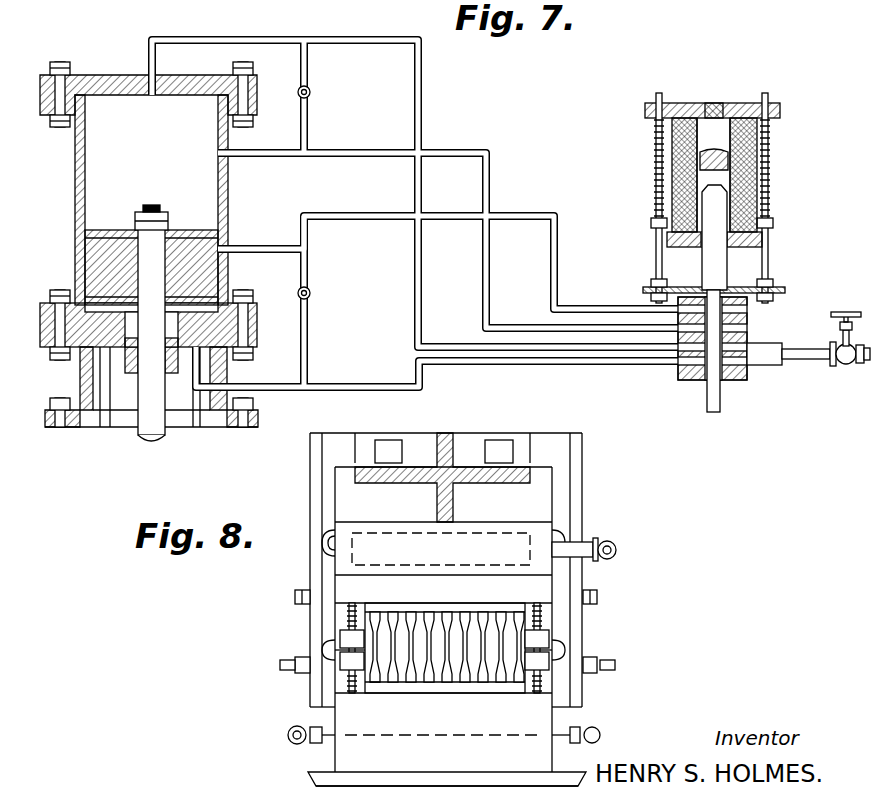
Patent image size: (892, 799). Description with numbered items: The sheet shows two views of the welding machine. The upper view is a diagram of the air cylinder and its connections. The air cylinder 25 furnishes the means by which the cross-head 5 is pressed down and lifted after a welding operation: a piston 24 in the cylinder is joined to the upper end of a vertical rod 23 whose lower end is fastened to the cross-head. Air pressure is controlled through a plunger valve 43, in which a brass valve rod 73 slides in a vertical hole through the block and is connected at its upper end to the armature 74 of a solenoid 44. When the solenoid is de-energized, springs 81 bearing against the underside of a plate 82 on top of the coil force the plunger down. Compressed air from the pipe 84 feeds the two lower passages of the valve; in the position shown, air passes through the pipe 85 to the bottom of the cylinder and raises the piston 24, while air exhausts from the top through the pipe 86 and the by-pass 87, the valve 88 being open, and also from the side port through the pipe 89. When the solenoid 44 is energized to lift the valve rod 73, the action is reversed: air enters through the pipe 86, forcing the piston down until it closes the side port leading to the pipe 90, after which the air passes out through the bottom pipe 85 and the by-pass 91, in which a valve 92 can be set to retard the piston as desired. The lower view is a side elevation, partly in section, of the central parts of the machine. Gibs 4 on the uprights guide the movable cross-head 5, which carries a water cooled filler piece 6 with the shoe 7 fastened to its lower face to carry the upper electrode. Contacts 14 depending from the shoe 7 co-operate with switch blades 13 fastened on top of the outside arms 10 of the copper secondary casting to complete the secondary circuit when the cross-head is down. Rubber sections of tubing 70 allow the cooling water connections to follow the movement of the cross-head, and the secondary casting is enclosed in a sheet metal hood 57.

In FIG. 7, the air cylinder 25 is at (75, 170).
In FIG. 7, the piston 24 is at (85, 257).
In FIG. 7, the vertical rod 23 is at (145, 418).
In FIG. 7, the pipe 86 is at (148, 50).
In FIG. 7, the by-pass 87 is at (308, 62).
In FIG. 7, the valve 88 is at (311, 93).
In FIG. 7, the pipe 89 is at (268, 157).
In FIG. 7, the pipe 90 is at (262, 246).
In FIG. 7, the by-pass 91 is at (308, 340).
In FIG. 7, the valve 92 is at (311, 290).
In FIG. 7, the pipe 85 is at (282, 370).
In FIG. 7, the plate 82 is at (781, 109).
In FIG. 7, the springs 81 is at (769, 160).
In FIG. 7, the solenoid 44 is at (757, 194).
In FIG. 7, the armature 74 is at (727, 258).
In FIG. 7, the valve 43 is at (748, 332).
In FIG. 7, the valve rod 73 is at (721, 406).
In FIG. 7, the pipe 84 is at (822, 366).
In FIG. 8, the gibs 4 is at (310, 497).
In FIG. 8, the cross-head 5 is at (443, 477).
In FIG. 8, the filler piece 6 is at (443, 548).
In FIG. 8, the sections of tubing 70 is at (598, 540).
In FIG. 8, the shoe 7 is at (443, 595).
In FIG. 8, the contacts 14 is at (382, 612).
In FIG. 8, the switch blades 13 is at (378, 690).
In FIG. 8, the outside arms 10 is at (444, 718).
In FIG. 8, the sheet metal hood 57 is at (442, 760).